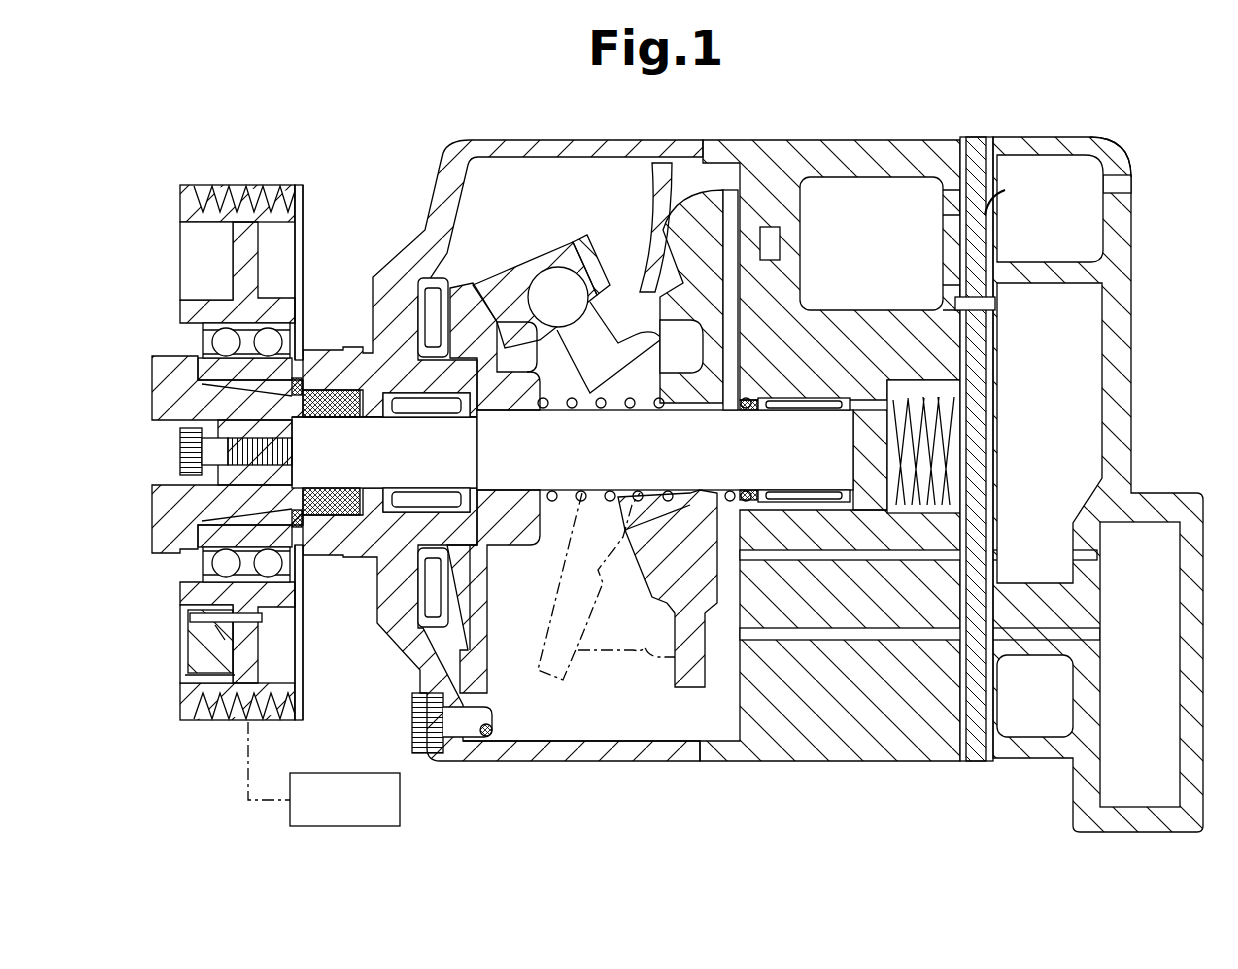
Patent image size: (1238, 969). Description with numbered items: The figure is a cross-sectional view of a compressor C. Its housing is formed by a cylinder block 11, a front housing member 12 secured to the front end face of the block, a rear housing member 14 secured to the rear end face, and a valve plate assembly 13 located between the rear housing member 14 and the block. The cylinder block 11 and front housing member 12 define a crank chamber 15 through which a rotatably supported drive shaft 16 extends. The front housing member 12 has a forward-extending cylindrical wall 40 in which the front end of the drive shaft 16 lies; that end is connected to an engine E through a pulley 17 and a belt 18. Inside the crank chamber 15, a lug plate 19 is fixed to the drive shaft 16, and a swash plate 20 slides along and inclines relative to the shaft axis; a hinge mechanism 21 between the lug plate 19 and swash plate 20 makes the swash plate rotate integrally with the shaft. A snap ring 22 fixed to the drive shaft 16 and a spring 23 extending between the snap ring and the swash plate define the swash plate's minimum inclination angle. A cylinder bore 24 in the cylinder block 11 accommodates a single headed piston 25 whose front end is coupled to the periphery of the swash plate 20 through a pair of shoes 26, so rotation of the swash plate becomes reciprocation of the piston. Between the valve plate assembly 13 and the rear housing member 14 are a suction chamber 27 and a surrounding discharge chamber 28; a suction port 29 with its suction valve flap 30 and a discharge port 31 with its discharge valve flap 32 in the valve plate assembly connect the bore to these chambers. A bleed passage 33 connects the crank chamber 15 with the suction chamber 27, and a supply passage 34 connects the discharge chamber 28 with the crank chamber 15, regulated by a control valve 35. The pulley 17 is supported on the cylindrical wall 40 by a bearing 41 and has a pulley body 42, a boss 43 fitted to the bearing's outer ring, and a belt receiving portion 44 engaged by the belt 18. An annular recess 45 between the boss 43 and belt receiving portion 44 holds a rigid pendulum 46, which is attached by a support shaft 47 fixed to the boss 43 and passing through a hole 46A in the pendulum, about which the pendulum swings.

The cylinder block 11 is at (816, 150).
The front housing member 12 is at (593, 147).
The valve plate assembly 13 is at (978, 142).
The rear housing member 14 is at (1075, 142).
The crank chamber 15 is at (585, 726).
The drive shaft 16 is at (598, 472).
The pulley 17 is at (308, 212).
The belt 18 is at (222, 722).
The lug plate 19 is at (462, 290).
The swash plate 20 is at (638, 442).
The hinge mechanism 21 is at (541, 254).
The snap ring 22 is at (770, 433).
The spring 23 is at (748, 486).
The cylinder bore 24 is at (860, 160).
The single headed piston 25 is at (745, 160).
The shoes 26 is at (660, 165).
The suction chamber 27 is at (1035, 456).
The discharge chamber 28 is at (1043, 237).
The suction port 29 is at (987, 302).
The suction valve flap 30 is at (958, 298).
The discharge port 31 is at (960, 206).
The discharge valve flap 32 is at (1006, 192).
The bleed passage 33 is at (851, 560).
The supply passage 34 is at (850, 641).
The control valve 35 is at (1155, 512).
The cylindrical wall 40 is at (292, 372).
The bearing 41 is at (295, 358).
The pulley body 42 is at (305, 240).
The boss 43 is at (275, 320).
The belt receiving portion 44 is at (184, 207).
The annular recess 45 is at (188, 676).
The rigid pendulum 46 is at (188, 645).
The hole 46A is at (218, 628).
The support shaft 47 is at (188, 617).
The compressor C is at (1152, 153).
The engine E is at (356, 774).